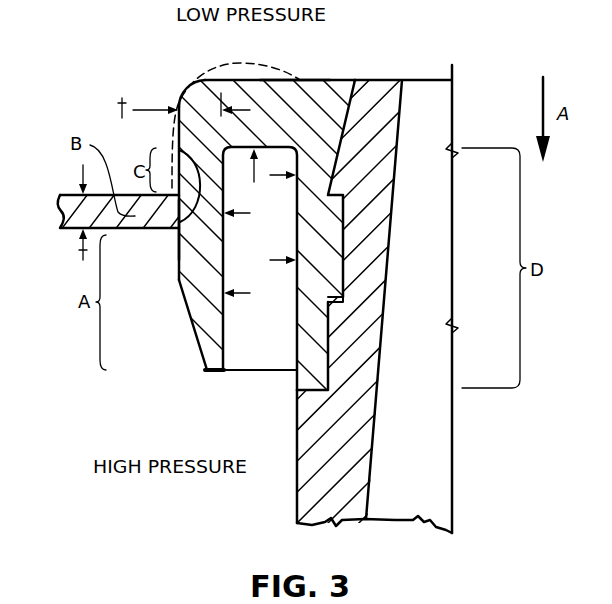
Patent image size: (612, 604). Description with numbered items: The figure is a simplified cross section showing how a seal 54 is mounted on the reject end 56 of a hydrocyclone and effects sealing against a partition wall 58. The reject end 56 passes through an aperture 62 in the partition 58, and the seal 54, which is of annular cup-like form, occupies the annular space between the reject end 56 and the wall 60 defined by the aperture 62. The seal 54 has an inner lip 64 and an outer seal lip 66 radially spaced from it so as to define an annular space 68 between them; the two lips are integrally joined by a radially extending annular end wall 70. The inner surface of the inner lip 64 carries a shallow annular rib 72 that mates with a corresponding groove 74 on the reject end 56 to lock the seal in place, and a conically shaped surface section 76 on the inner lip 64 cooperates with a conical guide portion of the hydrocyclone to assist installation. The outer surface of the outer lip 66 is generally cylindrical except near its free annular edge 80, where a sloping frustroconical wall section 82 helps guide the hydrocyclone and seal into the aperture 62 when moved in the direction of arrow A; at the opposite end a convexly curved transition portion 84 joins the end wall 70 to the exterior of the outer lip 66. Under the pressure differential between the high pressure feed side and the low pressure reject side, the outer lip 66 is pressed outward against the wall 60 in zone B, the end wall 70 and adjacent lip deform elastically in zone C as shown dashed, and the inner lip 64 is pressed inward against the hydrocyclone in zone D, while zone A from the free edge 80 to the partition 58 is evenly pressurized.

The seal 54 is at (301, 72).
The reject end of hydrocyclone 56 is at (396, 110).
The partition wall 58 is at (74, 222).
The wall 60 is at (176, 148).
The aperture 62 is at (179, 233).
The inner lip 64 is at (313, 371).
The outer seal lip 66 is at (207, 330).
The annular space 68 is at (267, 347).
The annular end wall 70 is at (254, 89).
The annular rib 72 is at (334, 243).
The groove 74 is at (335, 299).
The conically shaped surface section 76 is at (343, 147).
The free annular edge 80 is at (213, 373).
The frustroconical wall section 82 is at (186, 312).
The convexly curved transition portion 84 is at (186, 88).